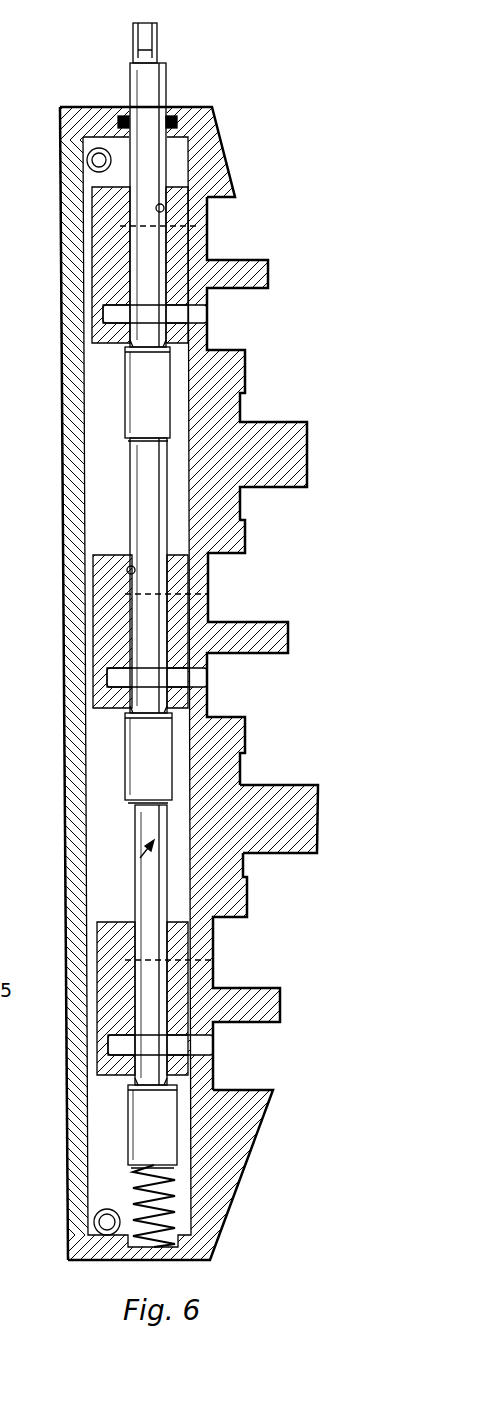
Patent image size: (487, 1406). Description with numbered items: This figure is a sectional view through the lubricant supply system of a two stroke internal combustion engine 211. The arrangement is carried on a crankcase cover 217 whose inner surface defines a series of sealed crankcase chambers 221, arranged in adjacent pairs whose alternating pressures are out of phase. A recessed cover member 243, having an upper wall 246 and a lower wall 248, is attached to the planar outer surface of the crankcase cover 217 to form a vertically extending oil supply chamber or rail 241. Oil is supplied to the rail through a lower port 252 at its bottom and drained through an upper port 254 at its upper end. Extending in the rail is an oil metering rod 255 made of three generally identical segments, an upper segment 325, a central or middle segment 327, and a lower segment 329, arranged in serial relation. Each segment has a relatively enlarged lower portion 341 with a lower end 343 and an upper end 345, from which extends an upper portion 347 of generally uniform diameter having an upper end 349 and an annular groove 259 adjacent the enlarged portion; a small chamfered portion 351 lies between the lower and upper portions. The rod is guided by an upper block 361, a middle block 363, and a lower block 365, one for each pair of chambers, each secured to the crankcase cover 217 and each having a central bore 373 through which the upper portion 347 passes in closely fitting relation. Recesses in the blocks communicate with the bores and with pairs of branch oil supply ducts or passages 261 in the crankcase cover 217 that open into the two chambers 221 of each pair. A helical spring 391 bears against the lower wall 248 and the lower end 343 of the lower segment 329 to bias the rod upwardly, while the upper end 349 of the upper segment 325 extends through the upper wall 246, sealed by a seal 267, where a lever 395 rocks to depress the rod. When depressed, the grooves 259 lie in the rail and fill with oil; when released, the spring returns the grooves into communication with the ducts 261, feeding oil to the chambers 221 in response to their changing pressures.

The two stroke internal combustion engine 211 is at (190, 641).
The crankcase cover 217 is at (284, 792).
The sealed crankcase chambers 221 is at (235, 240).
The oil supply chamber or rail 241 is at (100, 510).
The recessed cover member 243 is at (77, 1200).
The upper wall 246 is at (94, 110).
The lower wall 248 is at (82, 1259).
The lower port 252 is at (103, 1222).
The upper port 254 is at (95, 160).
The oil metering rod 255 is at (140, 845).
The annular groove 259 is at (108, 300).
The branch oil supply ducts or passages 261 is at (215, 243).
The seal 267 is at (176, 123).
The upper segment 325 is at (135, 400).
The central or middle segment 327 is at (140, 773).
The lower segment 329 is at (140, 1140).
The enlarged lower portion 341 is at (162, 754).
The lower end 343 is at (128, 446).
The upper end 345 is at (170, 368).
The upper portion 347 is at (152, 168).
The upper end 349 is at (154, 544).
The chamfered portion 351 is at (180, 343).
The upper block 361 is at (100, 200).
The middle block 363 is at (128, 598).
The lower block 365 is at (105, 935).
The central bore 373 is at (170, 208).
The helical spring 391 is at (162, 1225).
The lever 395 is at (147, 38).